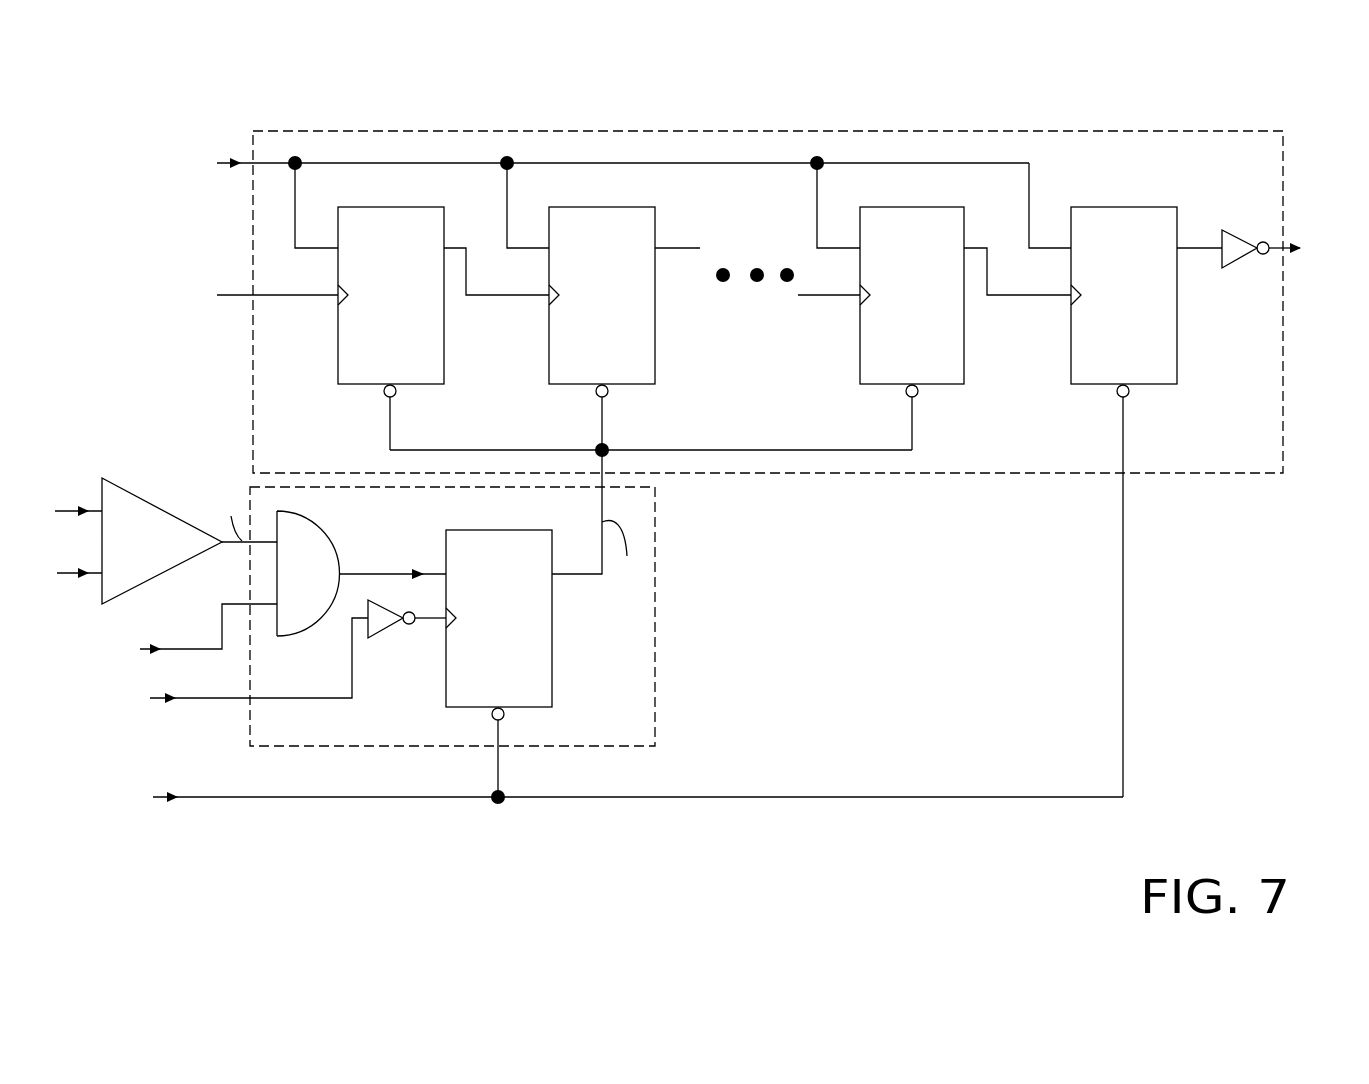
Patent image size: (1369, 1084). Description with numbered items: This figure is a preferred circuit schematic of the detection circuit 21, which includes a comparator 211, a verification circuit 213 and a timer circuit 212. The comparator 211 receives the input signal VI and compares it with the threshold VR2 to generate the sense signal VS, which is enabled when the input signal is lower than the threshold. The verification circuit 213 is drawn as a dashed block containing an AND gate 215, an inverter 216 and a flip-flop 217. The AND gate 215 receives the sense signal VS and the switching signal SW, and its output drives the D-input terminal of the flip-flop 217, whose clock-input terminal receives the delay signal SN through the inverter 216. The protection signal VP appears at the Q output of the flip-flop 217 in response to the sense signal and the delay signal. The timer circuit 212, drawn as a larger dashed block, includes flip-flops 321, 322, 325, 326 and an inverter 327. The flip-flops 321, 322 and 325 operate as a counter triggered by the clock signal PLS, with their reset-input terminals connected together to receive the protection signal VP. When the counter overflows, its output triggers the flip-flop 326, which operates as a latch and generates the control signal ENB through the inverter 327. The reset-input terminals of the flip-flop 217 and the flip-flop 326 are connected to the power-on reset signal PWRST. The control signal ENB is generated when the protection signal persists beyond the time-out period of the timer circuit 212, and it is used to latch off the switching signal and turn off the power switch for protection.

The detection circuit 21 is at (1362, 153).
The comparator 211 is at (150, 500).
The timer circuit 212 is at (851, 473).
The verification circuit 213 is at (655, 660).
The AND gate 215 is at (333, 530).
The inverter 216 is at (385, 634).
The flip-flop 217 is at (552, 636).
The flip-flop 321 is at (444, 370).
The flip-flop 322 is at (655, 370).
The flip-flop 325 is at (964, 367).
The flip-flop 326 is at (1177, 369).
The inverter 327 is at (1248, 240).